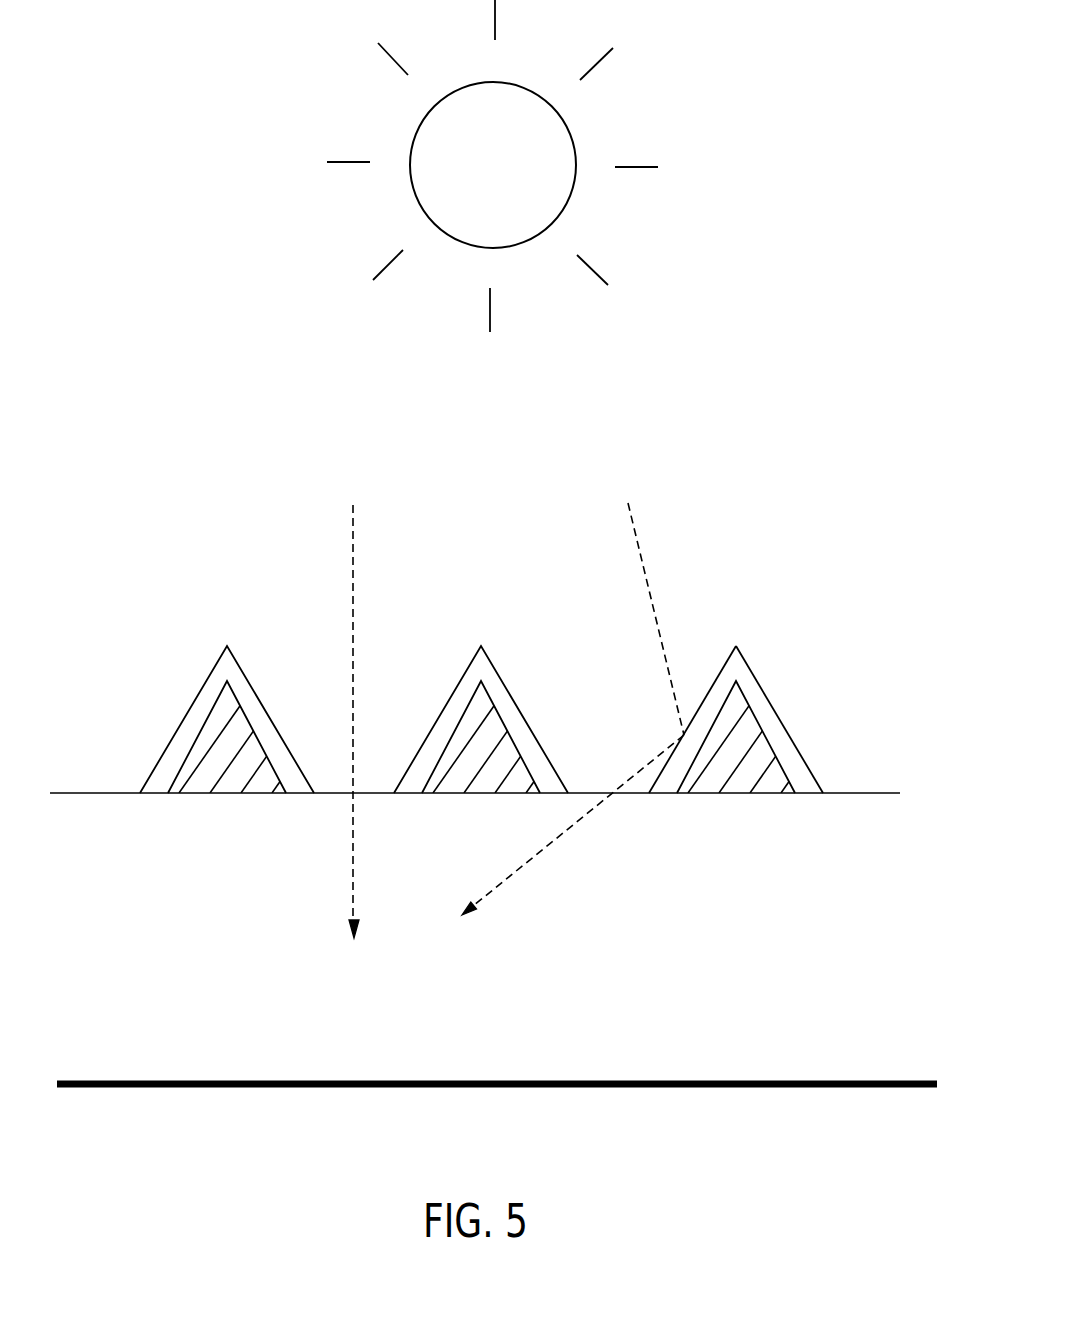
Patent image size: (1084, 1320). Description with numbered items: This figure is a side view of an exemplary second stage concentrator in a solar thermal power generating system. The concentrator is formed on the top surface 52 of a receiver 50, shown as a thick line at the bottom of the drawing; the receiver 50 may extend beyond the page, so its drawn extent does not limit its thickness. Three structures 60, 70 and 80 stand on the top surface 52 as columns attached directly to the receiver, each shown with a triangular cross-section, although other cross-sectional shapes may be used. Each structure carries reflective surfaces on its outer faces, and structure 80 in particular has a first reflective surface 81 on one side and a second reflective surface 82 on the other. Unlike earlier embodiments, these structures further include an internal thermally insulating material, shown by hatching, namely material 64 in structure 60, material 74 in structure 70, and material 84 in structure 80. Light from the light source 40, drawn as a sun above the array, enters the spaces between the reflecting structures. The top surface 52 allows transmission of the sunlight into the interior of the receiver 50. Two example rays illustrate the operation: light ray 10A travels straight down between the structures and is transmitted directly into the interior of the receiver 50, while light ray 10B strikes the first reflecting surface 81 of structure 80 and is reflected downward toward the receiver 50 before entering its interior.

The light source 40 is at (568, 200).
The light ray 10A is at (353, 580).
The light ray 10B is at (648, 578).
The receiver 50 is at (860, 1088).
The top surface 52 is at (872, 793).
The structure 60 is at (155, 768).
The internal thermally insulating material 64 is at (262, 763).
The structure 70 is at (408, 768).
The internal thermally insulating material 74 is at (513, 762).
The structure 80 is at (736, 738).
The first reflective surface 81 is at (717, 677).
The second reflective surface 82 is at (758, 673).
The internal thermally insulating material 84 is at (770, 760).